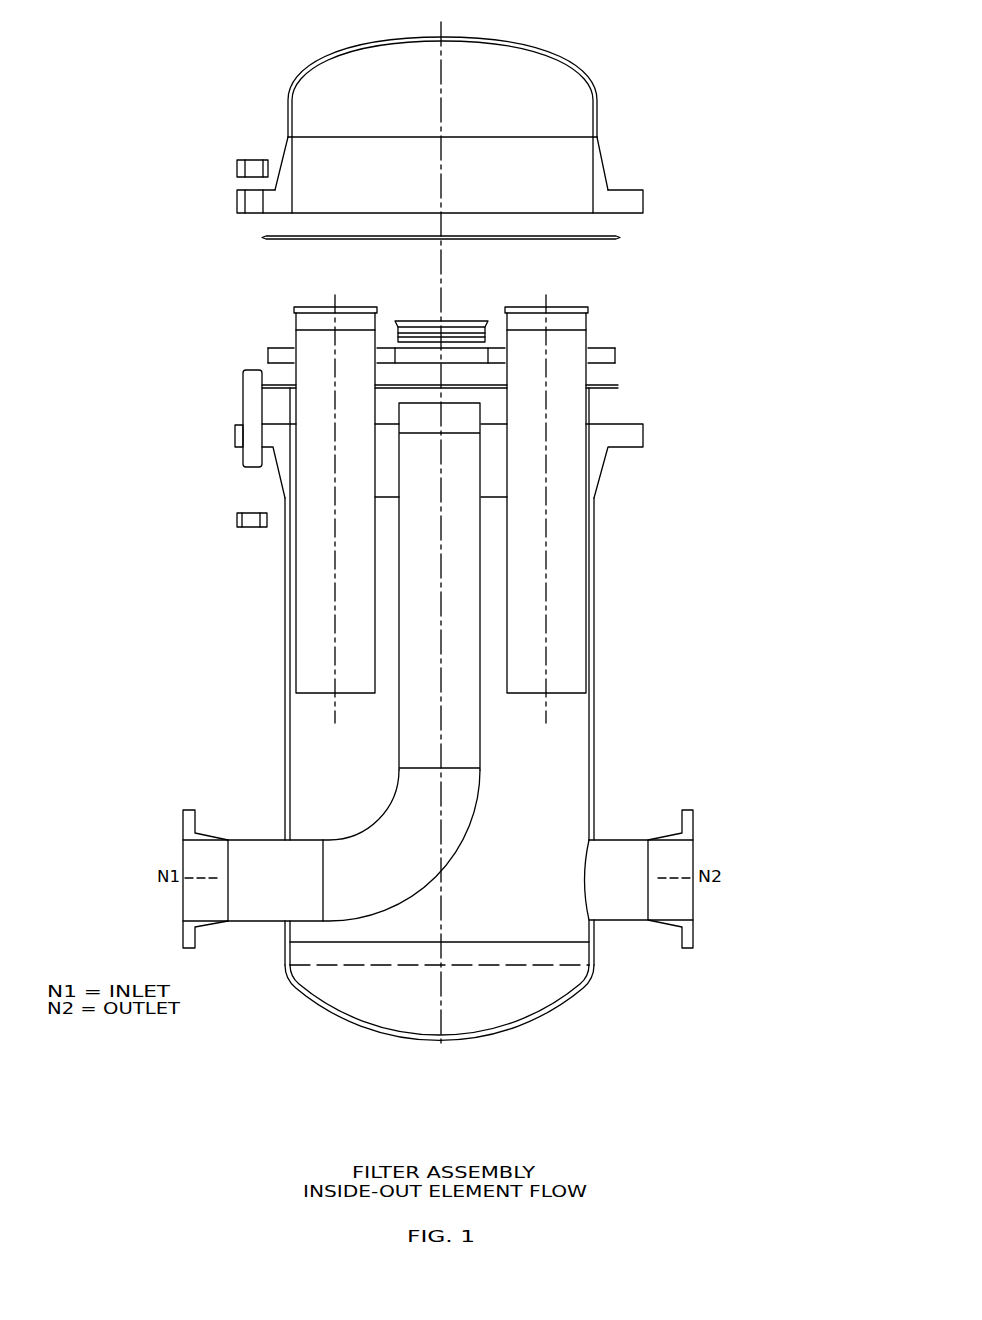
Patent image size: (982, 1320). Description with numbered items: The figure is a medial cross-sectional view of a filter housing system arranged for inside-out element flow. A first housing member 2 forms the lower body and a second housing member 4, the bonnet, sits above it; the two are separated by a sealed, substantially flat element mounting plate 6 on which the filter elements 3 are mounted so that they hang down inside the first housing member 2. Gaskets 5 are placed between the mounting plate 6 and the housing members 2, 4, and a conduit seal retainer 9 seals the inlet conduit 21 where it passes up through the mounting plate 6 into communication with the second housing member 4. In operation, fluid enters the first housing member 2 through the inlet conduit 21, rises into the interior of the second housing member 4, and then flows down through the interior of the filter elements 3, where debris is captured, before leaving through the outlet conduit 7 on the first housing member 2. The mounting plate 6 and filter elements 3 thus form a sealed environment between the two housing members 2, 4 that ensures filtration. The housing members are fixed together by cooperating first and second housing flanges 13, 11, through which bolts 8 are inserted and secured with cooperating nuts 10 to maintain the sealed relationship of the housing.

The first housing member 2 is at (285, 715).
The filter element 3 is at (344, 303).
The second housing member 4 is at (290, 97).
The gasket 5 is at (660, 353).
The element mounting plate 6 is at (268, 350).
The outlet conduit 7 is at (623, 870).
The bolt 8 is at (232, 468).
The conduit seal retainer 9 is at (473, 315).
The nut 10 is at (100, 565).
The second housing flange 11 is at (645, 192).
The first housing flange 13 is at (647, 443).
The inlet conduit 21 is at (257, 868).